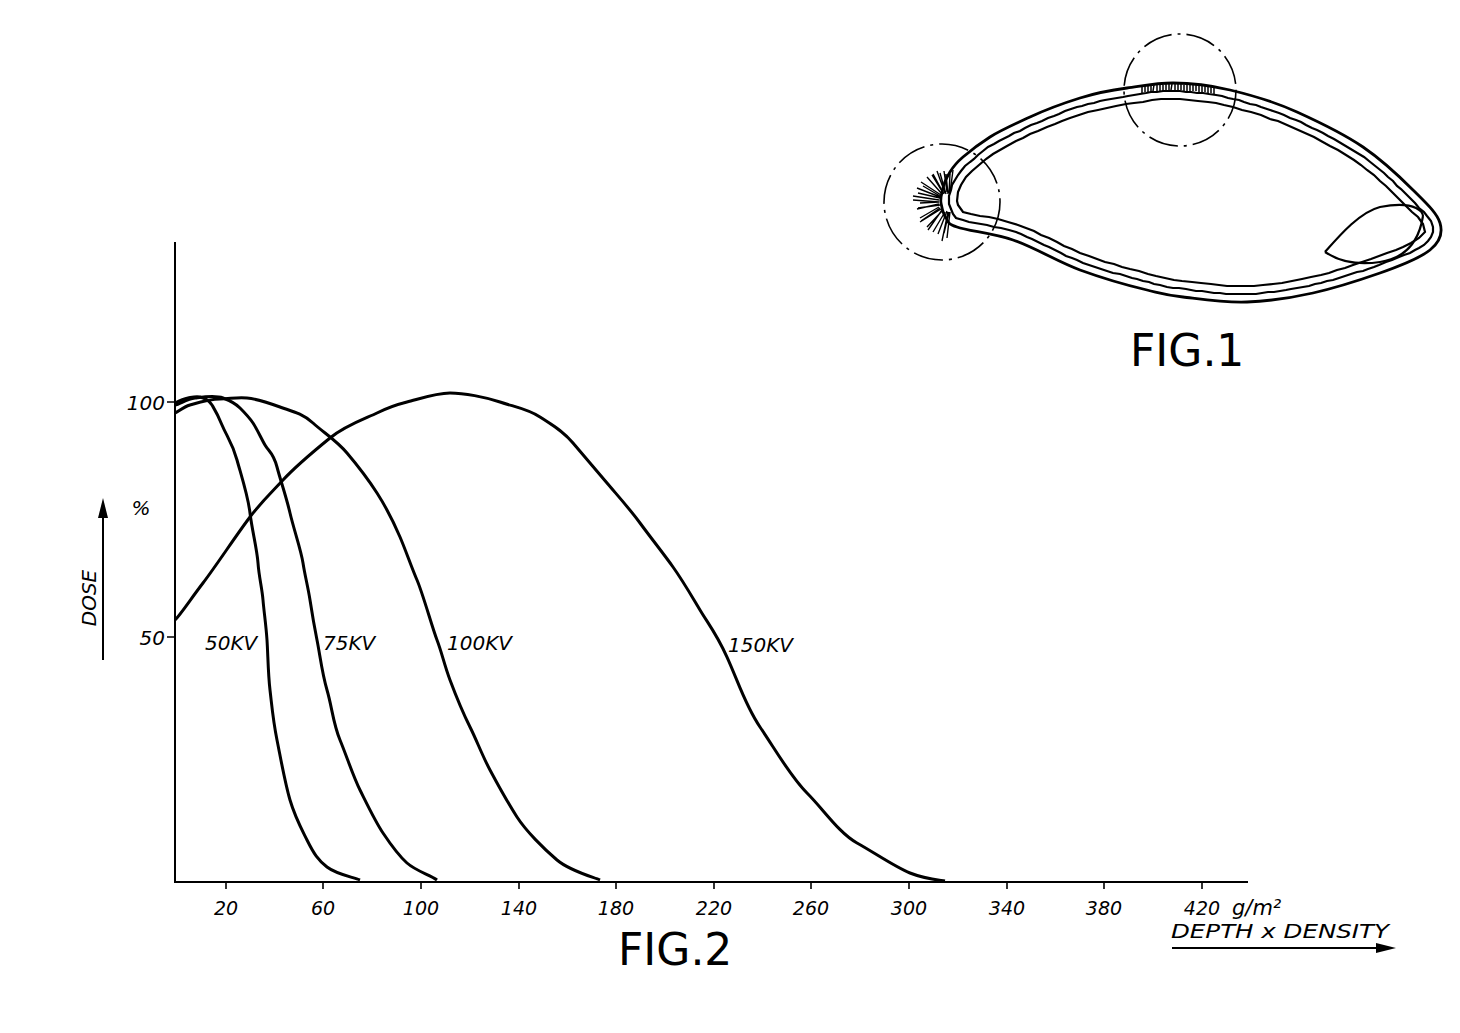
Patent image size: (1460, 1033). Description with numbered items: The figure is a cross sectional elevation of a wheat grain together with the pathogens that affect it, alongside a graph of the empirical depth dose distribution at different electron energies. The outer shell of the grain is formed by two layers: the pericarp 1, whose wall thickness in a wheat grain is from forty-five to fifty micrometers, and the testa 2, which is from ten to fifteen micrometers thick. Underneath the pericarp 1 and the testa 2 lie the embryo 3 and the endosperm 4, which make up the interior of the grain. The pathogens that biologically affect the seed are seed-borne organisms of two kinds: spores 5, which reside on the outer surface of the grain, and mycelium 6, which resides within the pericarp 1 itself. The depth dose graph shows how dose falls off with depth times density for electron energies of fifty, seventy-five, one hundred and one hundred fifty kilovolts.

The pericarp 1 is at (1313, 116).
The testa 2 is at (1276, 114).
The embryo 3 is at (1410, 223).
The endosperm 4 is at (1019, 160).
The spores 5 is at (944, 162).
The mycelium 6 is at (1216, 90).